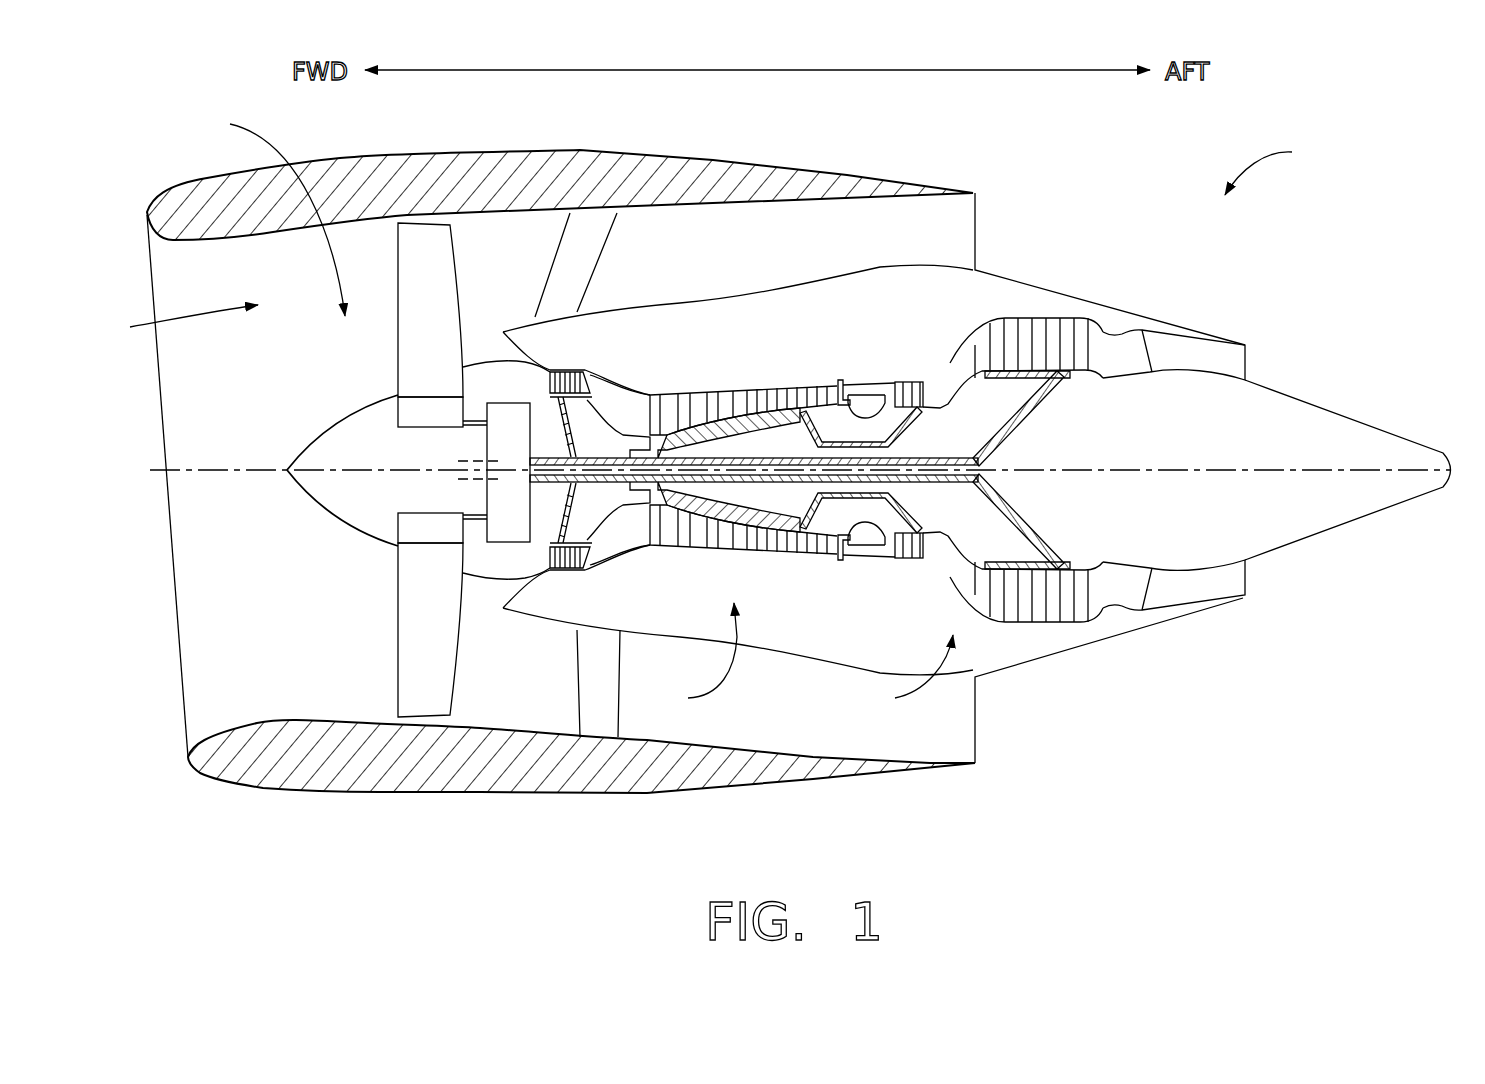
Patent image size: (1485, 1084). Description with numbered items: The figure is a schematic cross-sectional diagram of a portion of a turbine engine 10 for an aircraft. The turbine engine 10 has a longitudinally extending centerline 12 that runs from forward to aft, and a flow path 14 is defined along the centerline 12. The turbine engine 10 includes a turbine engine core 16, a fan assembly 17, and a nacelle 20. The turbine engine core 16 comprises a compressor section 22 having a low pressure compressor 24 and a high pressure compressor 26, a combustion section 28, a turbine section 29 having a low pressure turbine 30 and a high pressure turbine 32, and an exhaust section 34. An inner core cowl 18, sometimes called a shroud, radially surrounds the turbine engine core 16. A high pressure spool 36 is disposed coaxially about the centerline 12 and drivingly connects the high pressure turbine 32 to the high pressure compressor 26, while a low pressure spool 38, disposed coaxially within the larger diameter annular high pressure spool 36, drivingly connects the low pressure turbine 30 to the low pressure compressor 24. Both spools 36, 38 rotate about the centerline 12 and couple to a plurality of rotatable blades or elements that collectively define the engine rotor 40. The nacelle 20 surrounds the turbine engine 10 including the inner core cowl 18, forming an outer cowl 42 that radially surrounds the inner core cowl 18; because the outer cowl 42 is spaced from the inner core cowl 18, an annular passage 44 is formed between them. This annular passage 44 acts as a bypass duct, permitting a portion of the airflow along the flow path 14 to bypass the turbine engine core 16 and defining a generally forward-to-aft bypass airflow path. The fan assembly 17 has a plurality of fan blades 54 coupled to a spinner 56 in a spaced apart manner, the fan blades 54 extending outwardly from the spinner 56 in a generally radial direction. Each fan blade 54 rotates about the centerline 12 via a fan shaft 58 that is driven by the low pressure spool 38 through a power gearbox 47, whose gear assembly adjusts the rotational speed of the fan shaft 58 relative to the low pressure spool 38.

The turbine engine 10 is at (1276, 167).
The centerline 12 is at (1347, 473).
The flow path 14 is at (163, 316).
The turbine engine core 16 is at (713, 325).
The fan assembly 17 is at (269, 216).
The inner core cowl 18 is at (728, 297).
The nacelle 20 is at (354, 158).
The compressor section 22 is at (695, 657).
The low pressure compressor 24 is at (565, 567).
The high pressure compressor 26 is at (658, 540).
The combustion section 28 is at (860, 400).
The turbine section 29 is at (906, 674).
The low pressure turbine 30 is at (1093, 613).
The high pressure turbine 32 is at (937, 573).
The exhaust section 34 is at (1233, 590).
The high pressure spool 36 is at (800, 560).
The low pressure spool 38 is at (1003, 530).
The engine rotor 40 is at (812, 608).
The outer cowl 42 is at (487, 217).
The annular passage 44 is at (933, 215).
The power gearbox 47 is at (498, 402).
The fan blades 54 is at (396, 337).
The spinner 56 is at (343, 497).
The fan shaft 58 is at (475, 460).